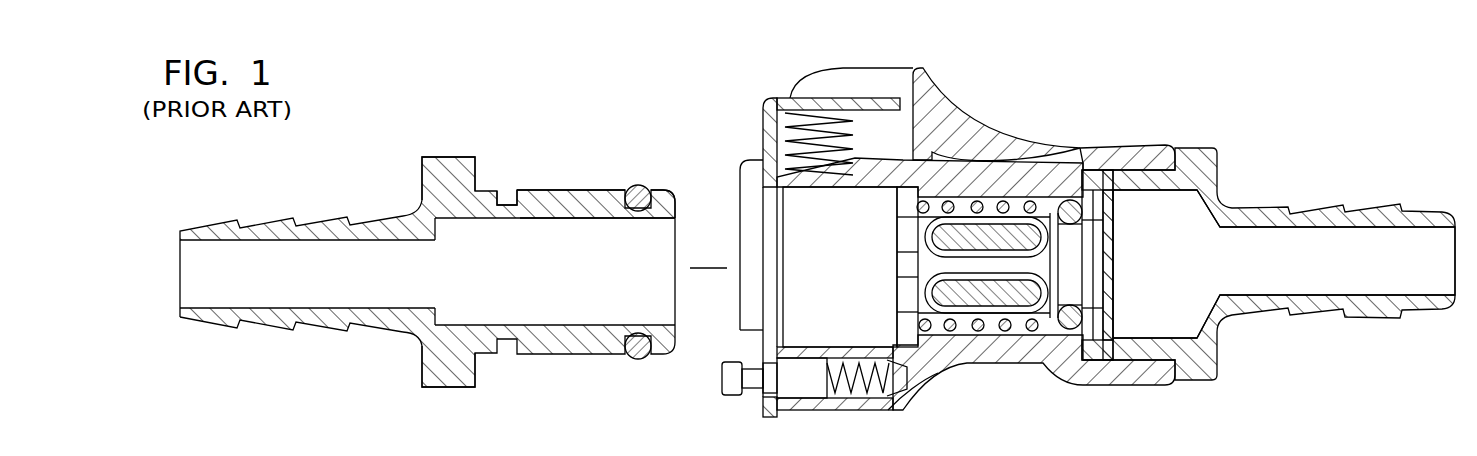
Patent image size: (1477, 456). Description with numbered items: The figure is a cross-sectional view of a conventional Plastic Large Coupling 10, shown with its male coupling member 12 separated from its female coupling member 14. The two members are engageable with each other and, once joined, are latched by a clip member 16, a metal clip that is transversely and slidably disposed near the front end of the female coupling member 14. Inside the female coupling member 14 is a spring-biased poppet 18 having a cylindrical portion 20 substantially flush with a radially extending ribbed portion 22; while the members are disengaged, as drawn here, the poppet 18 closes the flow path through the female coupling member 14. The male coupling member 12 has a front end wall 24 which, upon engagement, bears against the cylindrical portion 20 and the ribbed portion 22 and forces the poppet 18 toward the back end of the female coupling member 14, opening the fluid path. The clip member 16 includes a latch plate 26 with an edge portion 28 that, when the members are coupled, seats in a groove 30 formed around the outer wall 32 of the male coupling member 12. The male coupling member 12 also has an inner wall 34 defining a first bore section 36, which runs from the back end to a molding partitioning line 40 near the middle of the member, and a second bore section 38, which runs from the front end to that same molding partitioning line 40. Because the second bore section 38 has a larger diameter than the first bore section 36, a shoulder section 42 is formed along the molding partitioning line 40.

The Plastic Large Coupling 10 is at (1010, 243).
The male coupling member 12 is at (450, 262).
The female coupling member 14 is at (1167, 133).
The clip member 16 is at (927, 224).
The spring-biased poppet 18 is at (945, 332).
The cylindrical portion 20 is at (910, 235).
The ribbed portion 22 is at (907, 202).
The front end wall 24 is at (678, 200).
The latch plate 26 is at (767, 130).
The edge portion 28 is at (766, 345).
The groove 30 is at (507, 188).
The outer wall 32 is at (573, 190).
The inner wall 34 is at (575, 218).
The first bore section 36 is at (318, 283).
The second bore section 38 is at (548, 276).
The molding partitioning line 40 is at (435, 268).
The shoulder section 42 is at (437, 230).